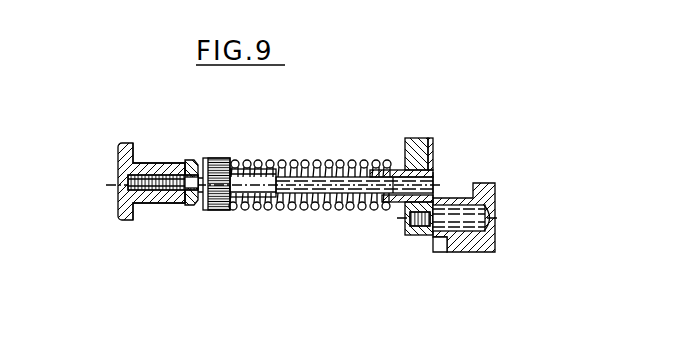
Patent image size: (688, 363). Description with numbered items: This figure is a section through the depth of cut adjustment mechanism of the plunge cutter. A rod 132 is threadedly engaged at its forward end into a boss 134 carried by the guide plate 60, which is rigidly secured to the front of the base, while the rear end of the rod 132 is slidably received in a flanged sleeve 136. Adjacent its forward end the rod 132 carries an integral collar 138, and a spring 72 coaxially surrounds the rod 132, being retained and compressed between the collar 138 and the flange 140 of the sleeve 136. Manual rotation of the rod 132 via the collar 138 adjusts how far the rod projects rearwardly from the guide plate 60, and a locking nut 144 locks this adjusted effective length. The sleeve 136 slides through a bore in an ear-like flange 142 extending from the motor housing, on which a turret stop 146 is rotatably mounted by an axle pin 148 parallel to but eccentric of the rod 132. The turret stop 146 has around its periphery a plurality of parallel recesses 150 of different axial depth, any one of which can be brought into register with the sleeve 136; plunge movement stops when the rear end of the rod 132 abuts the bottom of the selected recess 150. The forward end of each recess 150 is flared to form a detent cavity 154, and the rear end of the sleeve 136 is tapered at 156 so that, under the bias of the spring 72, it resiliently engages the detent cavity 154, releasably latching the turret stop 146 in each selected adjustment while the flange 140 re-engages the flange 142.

The guide plate 60 is at (120, 195).
The spring 72 is at (315, 209).
The rod 132 is at (302, 176).
The boss 134 is at (155, 161).
The flanged sleeve 136 is at (433, 170).
The collar 138 is at (221, 211).
The flange 140 is at (405, 160).
The ear-like flange 142 is at (438, 137).
The locking nut 144 is at (195, 207).
The turret stop 146 is at (495, 243).
The axle pin 148 is at (420, 233).
The recesses 150 is at (462, 190).
The detent cavity 154 is at (434, 248).
The tapered end 156 is at (435, 174).